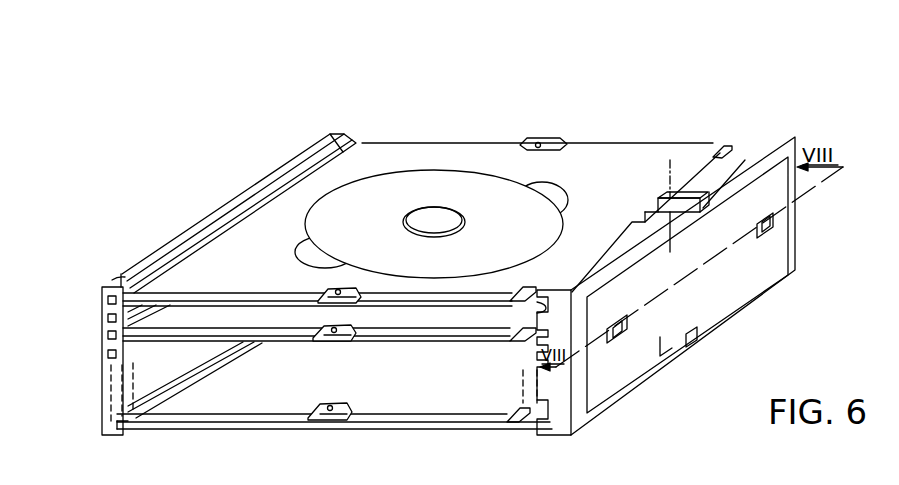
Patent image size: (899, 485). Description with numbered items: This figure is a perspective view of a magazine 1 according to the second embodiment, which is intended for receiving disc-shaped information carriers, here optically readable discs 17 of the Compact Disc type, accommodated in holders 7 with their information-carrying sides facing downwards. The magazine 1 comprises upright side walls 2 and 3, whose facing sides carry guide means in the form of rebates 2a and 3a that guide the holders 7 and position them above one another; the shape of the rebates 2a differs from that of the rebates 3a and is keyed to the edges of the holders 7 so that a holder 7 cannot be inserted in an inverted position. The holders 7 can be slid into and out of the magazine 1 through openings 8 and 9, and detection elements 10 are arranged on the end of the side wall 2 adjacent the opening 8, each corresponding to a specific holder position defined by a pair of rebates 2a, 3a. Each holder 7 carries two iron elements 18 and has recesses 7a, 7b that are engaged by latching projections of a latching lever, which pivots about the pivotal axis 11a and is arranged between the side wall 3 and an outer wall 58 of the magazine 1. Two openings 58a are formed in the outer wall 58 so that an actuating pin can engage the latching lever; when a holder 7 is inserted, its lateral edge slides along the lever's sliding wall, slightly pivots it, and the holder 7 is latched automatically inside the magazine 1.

The magazine 1 is at (493, 132).
The side wall 2 is at (172, 246).
The rebates 2a is at (122, 274).
The side wall 3 is at (760, 145).
The rebates 3a is at (532, 308).
The holders 7 is at (608, 153).
The recesses 7a is at (520, 290).
The recesses 7b is at (720, 144).
The opening 8 is at (150, 370).
The opening 9 is at (398, 144).
The detection elements 10 is at (107, 300).
The pivotal axis 11a is at (668, 167).
The optically readable discs 17 is at (490, 185).
The iron elements 18 is at (548, 143).
The outer wall 58 is at (693, 330).
The openings 58a is at (760, 218).